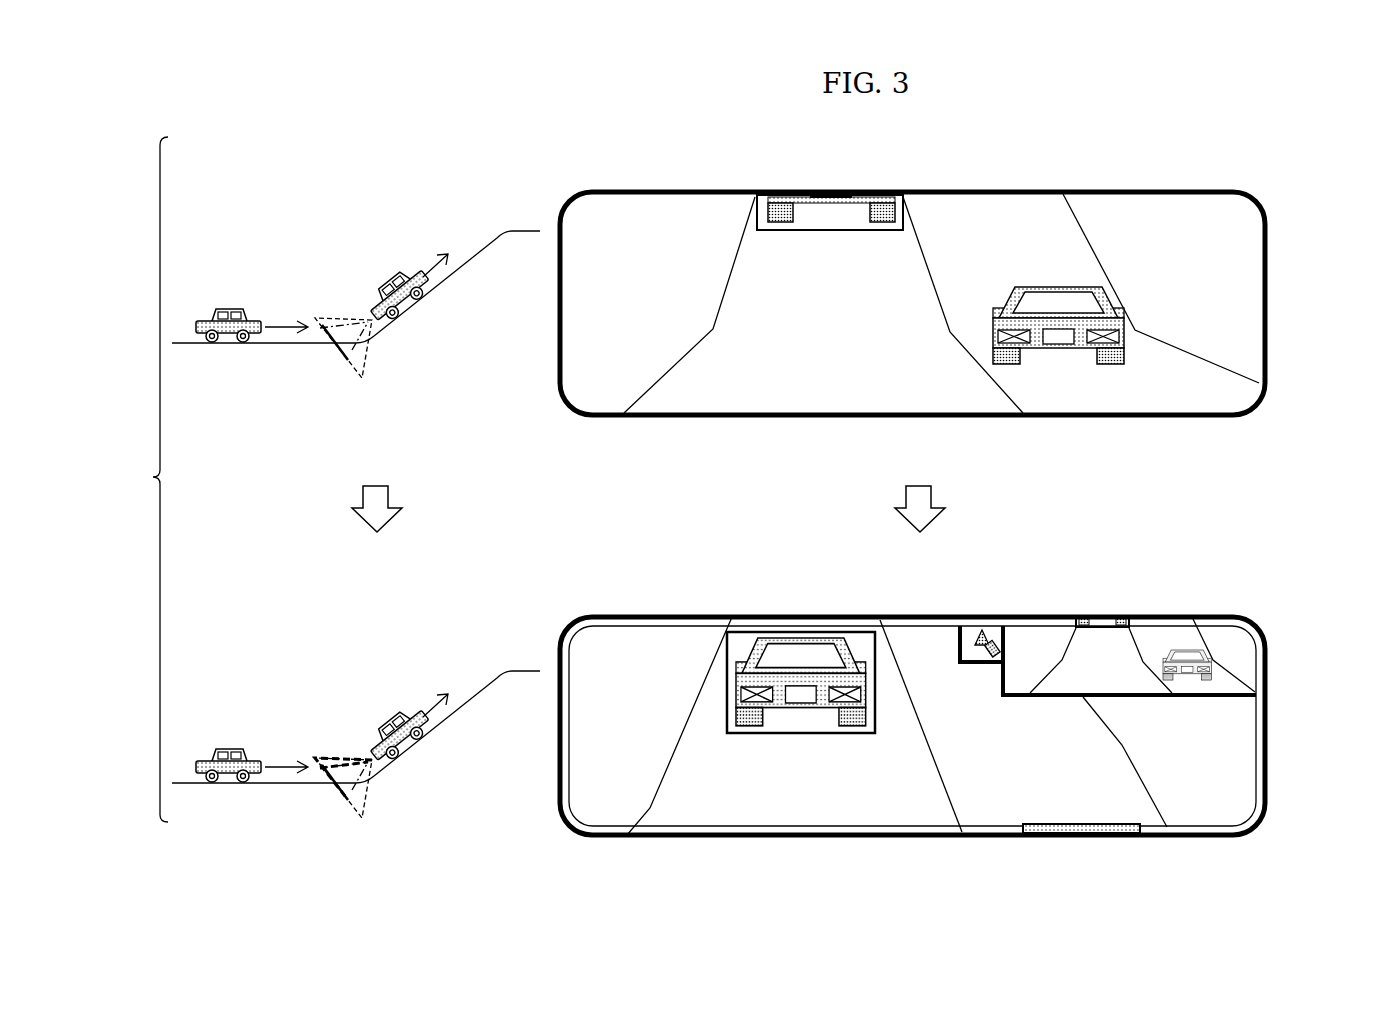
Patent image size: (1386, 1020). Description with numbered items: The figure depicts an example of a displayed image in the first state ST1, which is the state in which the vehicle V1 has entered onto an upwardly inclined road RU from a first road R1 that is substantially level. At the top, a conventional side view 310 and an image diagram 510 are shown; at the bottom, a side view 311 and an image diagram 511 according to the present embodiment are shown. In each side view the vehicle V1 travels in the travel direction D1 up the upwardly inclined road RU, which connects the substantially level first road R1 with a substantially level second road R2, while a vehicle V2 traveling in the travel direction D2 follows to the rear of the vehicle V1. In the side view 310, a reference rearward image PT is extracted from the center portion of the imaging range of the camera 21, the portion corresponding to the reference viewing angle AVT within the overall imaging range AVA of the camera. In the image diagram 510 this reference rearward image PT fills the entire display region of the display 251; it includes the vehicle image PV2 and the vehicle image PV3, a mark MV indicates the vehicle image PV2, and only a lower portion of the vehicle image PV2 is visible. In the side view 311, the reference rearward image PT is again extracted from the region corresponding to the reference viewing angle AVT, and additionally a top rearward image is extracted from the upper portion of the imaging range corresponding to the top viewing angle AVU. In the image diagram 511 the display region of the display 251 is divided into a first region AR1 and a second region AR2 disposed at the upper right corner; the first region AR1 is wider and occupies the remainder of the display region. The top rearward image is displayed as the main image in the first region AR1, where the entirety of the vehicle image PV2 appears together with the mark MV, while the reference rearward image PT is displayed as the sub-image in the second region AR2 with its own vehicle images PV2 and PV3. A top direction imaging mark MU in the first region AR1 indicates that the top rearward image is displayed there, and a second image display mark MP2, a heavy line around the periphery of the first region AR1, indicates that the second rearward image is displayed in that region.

The conventional side view 310 is at (218, 240).
The side view 311 is at (278, 704).
The image diagram 510 is at (697, 187).
The image diagram 511 is at (697, 607).
The display 251 is at (1103, 192).
The camera 21 is at (390, 332).
The vehicle V1 is at (387, 284).
The vehicle V2 is at (226, 309).
The travel direction D1 is at (426, 481).
The travel direction D2 is at (286, 536).
The first road R1 is at (203, 346).
The second road R2 is at (522, 232).
The upwardly inclined road RU is at (446, 283).
The camera angle of view AVA is at (367, 358).
The reference viewing angle AVT is at (355, 372).
The top viewing angle AVU is at (342, 748).
The vehicle image PV2 is at (905, 200).
The vehicle image PV3 is at (1085, 287).
The mark MV is at (832, 233).
The top direction imaging mark MU is at (990, 622).
The reference rearward image PT is at (1238, 290).
The second region AR2 is at (1240, 648).
The second image display mark MP2 is at (1240, 695).
The first region AR1 is at (1228, 778).
The first state ST1 is at (136, 479).